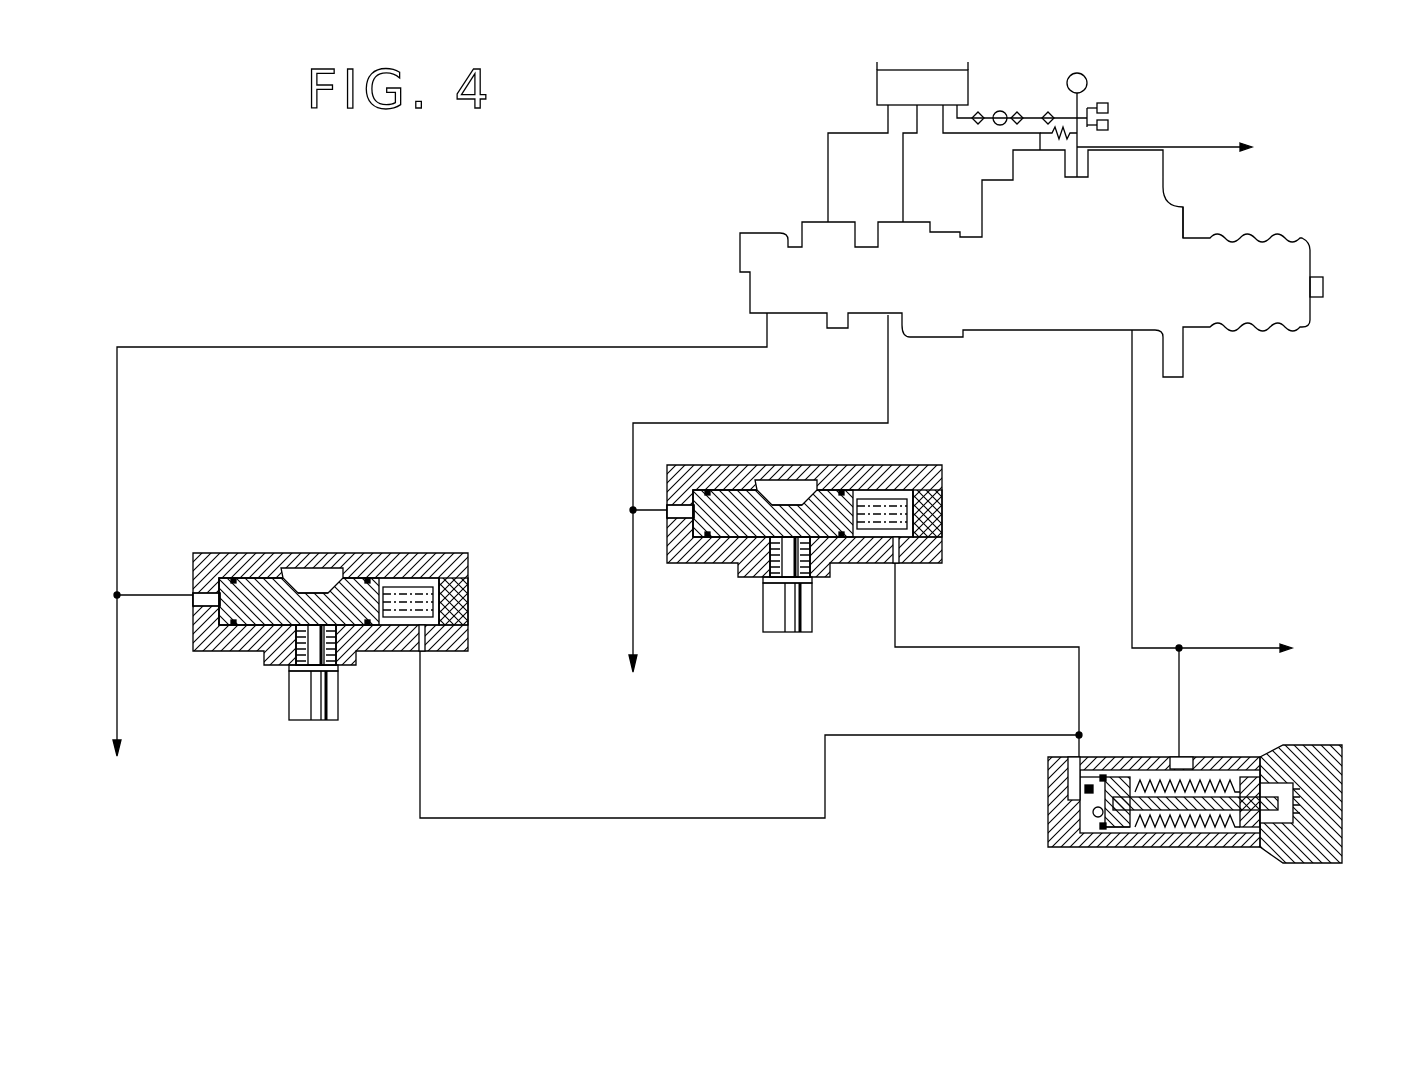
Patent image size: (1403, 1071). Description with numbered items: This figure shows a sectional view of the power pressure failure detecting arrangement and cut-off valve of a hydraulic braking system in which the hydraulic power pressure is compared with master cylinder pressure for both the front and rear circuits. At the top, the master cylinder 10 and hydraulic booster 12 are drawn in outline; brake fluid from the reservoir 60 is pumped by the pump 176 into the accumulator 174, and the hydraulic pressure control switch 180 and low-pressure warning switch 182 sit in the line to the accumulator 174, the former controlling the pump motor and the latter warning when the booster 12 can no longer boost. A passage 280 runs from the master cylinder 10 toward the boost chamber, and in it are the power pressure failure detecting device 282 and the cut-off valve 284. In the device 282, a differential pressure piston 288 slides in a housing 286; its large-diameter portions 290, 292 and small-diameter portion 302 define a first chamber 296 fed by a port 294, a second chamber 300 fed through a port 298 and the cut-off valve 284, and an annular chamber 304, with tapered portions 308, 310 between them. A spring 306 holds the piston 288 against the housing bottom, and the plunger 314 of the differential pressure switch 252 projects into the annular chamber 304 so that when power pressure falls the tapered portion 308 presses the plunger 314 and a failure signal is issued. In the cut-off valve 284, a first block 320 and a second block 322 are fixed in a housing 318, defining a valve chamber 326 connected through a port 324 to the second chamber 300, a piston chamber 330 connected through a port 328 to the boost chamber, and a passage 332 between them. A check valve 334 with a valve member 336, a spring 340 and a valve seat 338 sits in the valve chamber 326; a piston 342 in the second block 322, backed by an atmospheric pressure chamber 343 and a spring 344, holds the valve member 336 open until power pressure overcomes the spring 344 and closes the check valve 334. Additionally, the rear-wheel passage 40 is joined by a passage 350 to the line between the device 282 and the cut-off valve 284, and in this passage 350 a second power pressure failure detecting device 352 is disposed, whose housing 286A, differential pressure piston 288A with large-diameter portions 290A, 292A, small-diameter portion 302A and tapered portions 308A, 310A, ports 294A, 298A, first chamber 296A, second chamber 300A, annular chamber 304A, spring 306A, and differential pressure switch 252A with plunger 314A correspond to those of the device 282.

The master cylinder 10 is at (760, 238).
The hydraulic booster 12 is at (1180, 215).
The passage 40 is at (377, 350).
The reservoir 60 is at (876, 97).
The accumulator 174 is at (1087, 81).
The pump 176 is at (1000, 110).
The hydraulic pressure control switch 180 is at (1109, 107).
The low-pressure warning switch 182 is at (1109, 125).
The differential pressure switch 252 is at (808, 632).
The differential pressure switch 252A is at (335, 724).
The passage 280 is at (998, 650).
The power pressure failure detecting device 282 is at (685, 628).
The cut-off valve 284 is at (1163, 875).
The housing 286 is at (837, 503).
The housing 286A is at (367, 589).
The differential pressure piston 288 is at (831, 465).
The differential pressure piston 288A is at (350, 551).
The large-diameter portion 290 is at (773, 482).
The large-diameter portion 290A is at (291, 569).
The large-diameter portion 292 is at (932, 500).
The large-diameter portion 292A is at (473, 584).
The port 294 is at (666, 553).
The port 294A is at (169, 625).
The first chamber 296 is at (675, 453).
The first chamber 296A is at (173, 540).
The port 298 is at (869, 571).
The port 298A is at (387, 665).
The second chamber 300 is at (962, 553).
The second chamber 300A is at (498, 627).
The small-diameter portion 302 is at (843, 472).
The small-diameter portion 302A is at (358, 554).
The annular chamber 304 is at (791, 466).
The annular chamber 304A is at (313, 548).
The spring 306 is at (960, 513).
The spring 306A is at (501, 601).
The tapered portion 308 is at (756, 580).
The tapered portion 308A is at (255, 661).
The tapered portion 310 is at (822, 585).
The tapered portion 310A is at (351, 682).
The plunger 314 is at (755, 617).
The plunger 314A is at (269, 702).
The housing 318 is at (1320, 750).
The first block 320 is at (1108, 790).
The second block 322 is at (1288, 770).
The port 324 is at (1076, 760).
The valve chamber 326 is at (1085, 789).
The port 328 is at (1187, 760).
The piston chamber 330 is at (1188, 832).
The passage 332 is at (1113, 830).
The check valve 334 is at (1092, 812).
The valve member 336 is at (1113, 824).
The valve seat 338 is at (1118, 777).
The spring 340 is at (1097, 773).
The piston 342 is at (1255, 805).
The atmospheric pressure chamber 343 is at (1273, 857).
The spring 344 is at (1242, 762).
The passage 350 is at (605, 820).
The power pressure failure detecting device 352 is at (208, 742).